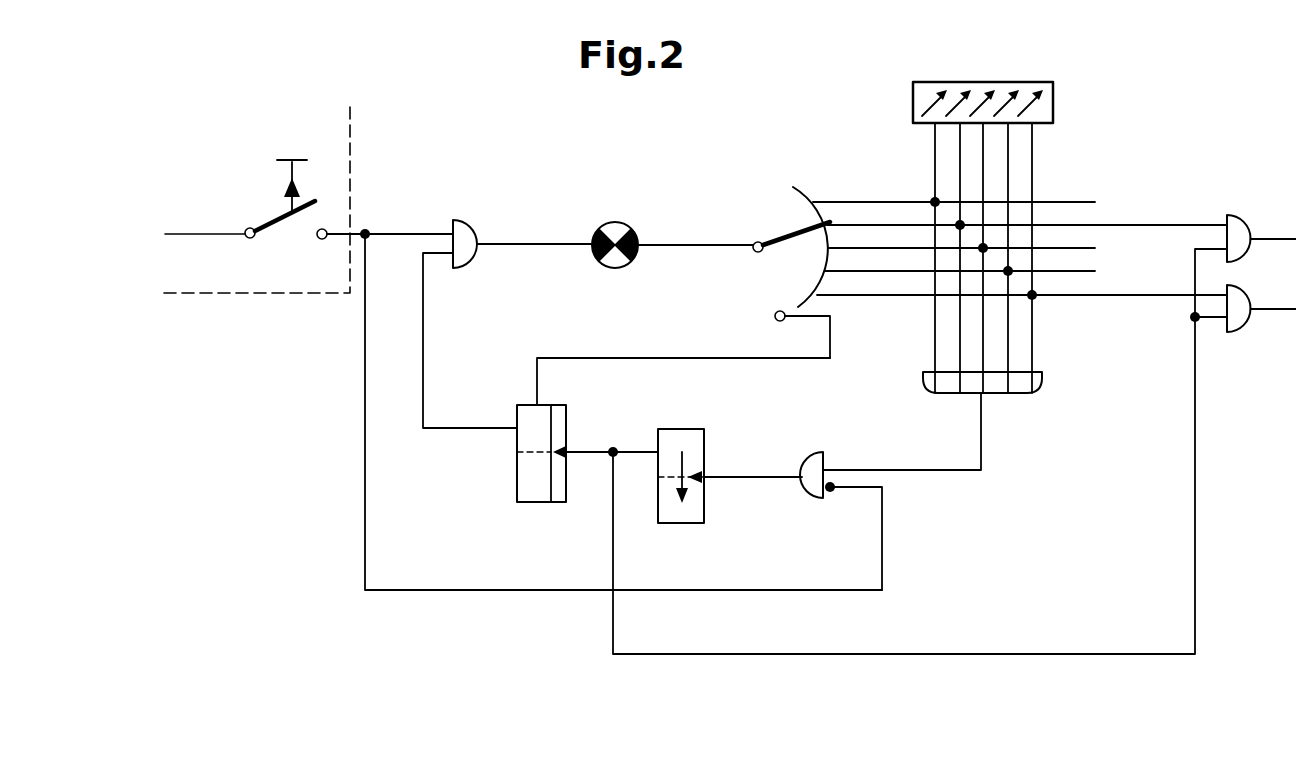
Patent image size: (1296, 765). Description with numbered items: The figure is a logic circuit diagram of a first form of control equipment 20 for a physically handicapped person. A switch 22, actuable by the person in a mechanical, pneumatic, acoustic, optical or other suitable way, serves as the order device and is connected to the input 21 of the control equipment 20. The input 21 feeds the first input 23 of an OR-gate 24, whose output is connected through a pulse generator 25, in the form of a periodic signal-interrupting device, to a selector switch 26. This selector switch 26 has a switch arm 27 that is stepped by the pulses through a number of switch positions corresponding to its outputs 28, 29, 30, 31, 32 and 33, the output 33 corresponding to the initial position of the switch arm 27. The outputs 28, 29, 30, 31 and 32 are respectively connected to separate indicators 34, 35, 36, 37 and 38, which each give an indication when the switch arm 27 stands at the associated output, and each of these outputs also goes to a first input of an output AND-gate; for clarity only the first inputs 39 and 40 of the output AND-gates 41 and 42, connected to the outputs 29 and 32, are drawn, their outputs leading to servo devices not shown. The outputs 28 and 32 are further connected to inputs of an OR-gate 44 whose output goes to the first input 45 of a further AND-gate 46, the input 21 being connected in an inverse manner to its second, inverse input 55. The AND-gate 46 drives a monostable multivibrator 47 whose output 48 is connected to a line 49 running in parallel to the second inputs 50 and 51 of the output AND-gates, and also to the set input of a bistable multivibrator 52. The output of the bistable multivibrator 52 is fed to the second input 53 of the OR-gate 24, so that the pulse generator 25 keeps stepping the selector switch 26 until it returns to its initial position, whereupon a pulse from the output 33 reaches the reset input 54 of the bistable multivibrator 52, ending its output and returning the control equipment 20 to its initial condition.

The control equipment 20 is at (767, 137).
The input 21 is at (366, 229).
The switch 22 is at (272, 226).
The first input 23 is at (434, 233).
The OR-gate 24 is at (470, 232).
The pulse generator 25 is at (649, 213).
The selector switch 26 is at (771, 236).
The switch arm 27 is at (788, 244).
The output 28 is at (954, 190).
The output 29 is at (1027, 214).
The output 30 is at (961, 237).
The output 31 is at (960, 260).
The output 32 is at (1022, 284).
The output 33 is at (804, 327).
The indicator 34 is at (926, 121).
The indicator 35 is at (951, 121).
The indicator 36 is at (975, 121).
The indicator 37 is at (999, 121).
The indicator 38 is at (1023, 121).
The first input 39 is at (1212, 224).
The first input 40 is at (1214, 295).
The output AND-gate 41 is at (1247, 235).
The output AND-gate 42 is at (1247, 305).
The OR-gate 44 is at (1018, 387).
The first input 45 is at (849, 470).
The AND-gate 46 is at (810, 468).
The monostable multivibrator 47 is at (695, 445).
The output 48 is at (635, 452).
The line 49 is at (886, 655).
The second input 50 is at (1206, 247).
The second input 51 is at (1210, 319).
The bistable multivibrator 52 is at (534, 495).
The second input 53 is at (441, 256).
The reset input 54 is at (536, 397).
The second, inverse input 55 is at (853, 489).